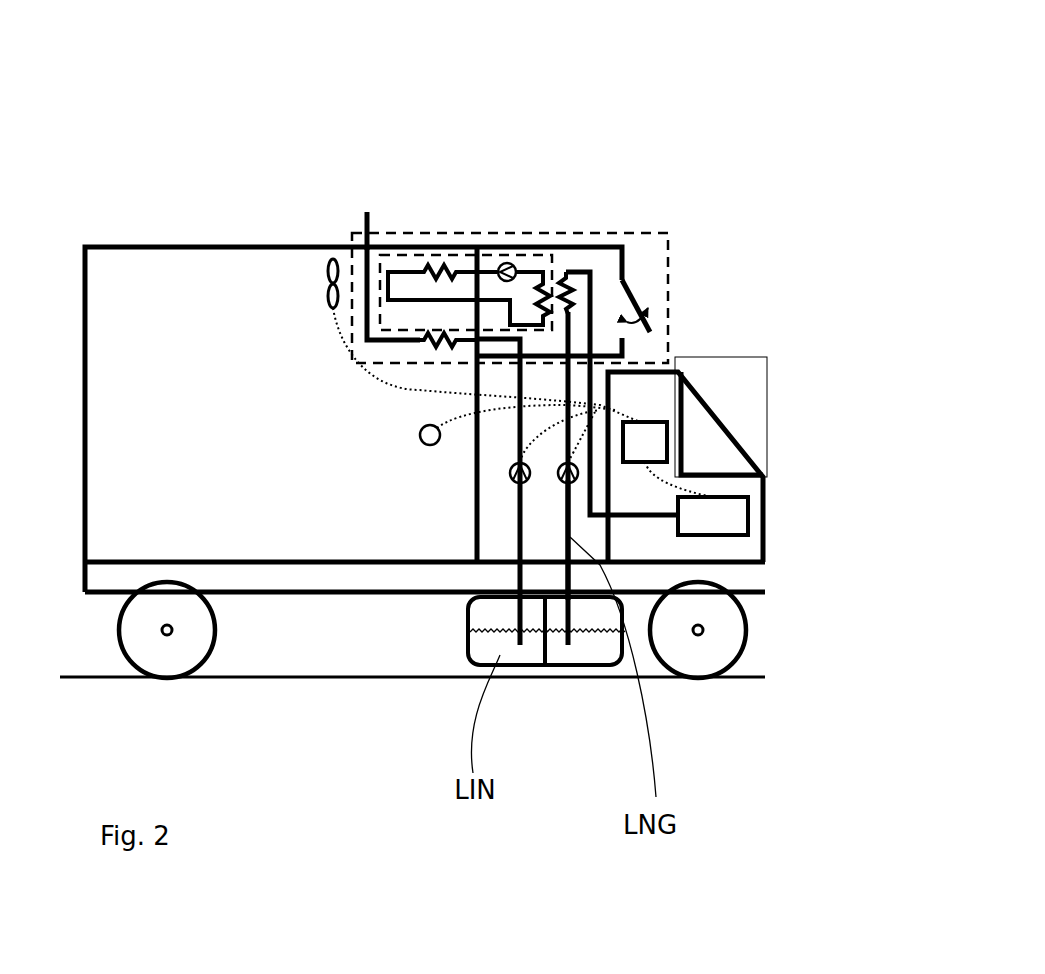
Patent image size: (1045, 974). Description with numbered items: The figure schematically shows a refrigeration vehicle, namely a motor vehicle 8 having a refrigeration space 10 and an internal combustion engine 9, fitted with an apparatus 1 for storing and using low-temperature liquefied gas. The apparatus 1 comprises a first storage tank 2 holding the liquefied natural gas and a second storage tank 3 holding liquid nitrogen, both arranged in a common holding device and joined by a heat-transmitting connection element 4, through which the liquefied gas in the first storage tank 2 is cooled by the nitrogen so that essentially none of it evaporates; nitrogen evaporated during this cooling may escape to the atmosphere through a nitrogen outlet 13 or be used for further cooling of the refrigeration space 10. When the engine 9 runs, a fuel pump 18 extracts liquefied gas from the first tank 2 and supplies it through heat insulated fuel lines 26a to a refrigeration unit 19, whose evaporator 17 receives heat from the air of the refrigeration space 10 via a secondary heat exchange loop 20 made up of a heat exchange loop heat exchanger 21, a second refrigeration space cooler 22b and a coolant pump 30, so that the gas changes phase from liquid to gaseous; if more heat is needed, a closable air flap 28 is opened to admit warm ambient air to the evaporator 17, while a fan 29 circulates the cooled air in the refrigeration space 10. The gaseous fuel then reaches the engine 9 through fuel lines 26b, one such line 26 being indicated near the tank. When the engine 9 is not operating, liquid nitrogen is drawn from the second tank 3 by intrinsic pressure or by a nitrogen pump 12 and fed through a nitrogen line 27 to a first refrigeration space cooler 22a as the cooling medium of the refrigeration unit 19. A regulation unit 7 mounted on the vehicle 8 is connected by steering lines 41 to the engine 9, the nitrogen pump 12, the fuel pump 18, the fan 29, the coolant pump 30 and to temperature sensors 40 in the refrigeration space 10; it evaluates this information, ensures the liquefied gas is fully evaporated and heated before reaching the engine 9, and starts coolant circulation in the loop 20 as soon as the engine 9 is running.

The apparatus 1 is at (468, 667).
The first storage tank 2 is at (585, 663).
The second storage tank 3 is at (528, 665).
The heat-transmitting connection element 4 is at (547, 652).
The regulation unit 7 is at (647, 422).
The motor vehicle 8 is at (693, 112).
The internal combustion engine 9 is at (748, 510).
The refrigeration space 10 is at (185, 247).
The nitrogen pump 12 is at (558, 463).
The nitrogen outlet 13 is at (363, 212).
The evaporator 17 is at (562, 272).
The fuel pump 18 is at (510, 465).
The refrigeration unit 19 is at (598, 233).
The secondary heat exchange loop 20 is at (405, 258).
The heat exchange loop heat exchanger 21 is at (540, 277).
The first refrigeration space cooler 22a is at (420, 348).
The second refrigeration space cooler 22b is at (433, 262).
The LNG supply line 26 is at (612, 660).
The heat insulated fuel lines 26a is at (557, 490).
The fuel lines 26b is at (593, 295).
The nitrogen line 27 is at (360, 258).
The closable air flap 28 is at (635, 296).
The fan 29 is at (322, 258).
The coolant pump 30 is at (508, 263).
The sensors 40 is at (420, 432).
The steering lines 41 is at (622, 405).